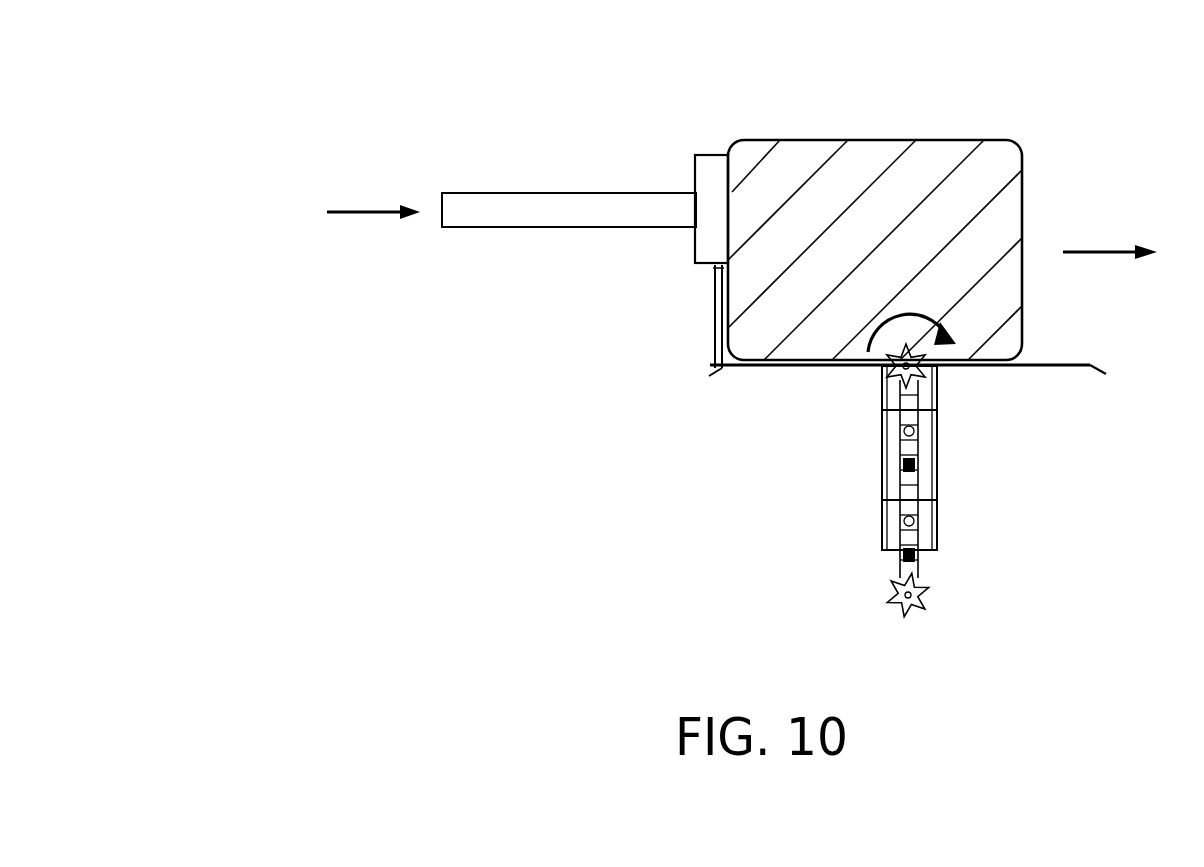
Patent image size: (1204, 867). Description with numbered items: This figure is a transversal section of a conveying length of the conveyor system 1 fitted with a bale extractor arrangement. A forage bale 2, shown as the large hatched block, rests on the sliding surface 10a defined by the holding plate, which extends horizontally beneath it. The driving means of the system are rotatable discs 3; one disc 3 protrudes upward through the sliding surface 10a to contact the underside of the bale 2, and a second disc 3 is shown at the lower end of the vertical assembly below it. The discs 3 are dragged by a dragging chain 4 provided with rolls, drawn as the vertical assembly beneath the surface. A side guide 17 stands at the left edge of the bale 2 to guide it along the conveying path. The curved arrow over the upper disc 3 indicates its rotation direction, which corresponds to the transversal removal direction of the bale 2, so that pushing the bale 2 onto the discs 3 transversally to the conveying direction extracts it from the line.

The conveyor system 1 is at (936, 108).
The forage bale 2 is at (948, 207).
The rotatable disc 3 is at (870, 370).
The dragging chain 4 is at (852, 462).
The side guide 17 is at (714, 330).
The sliding surface 10a is at (1047, 365).